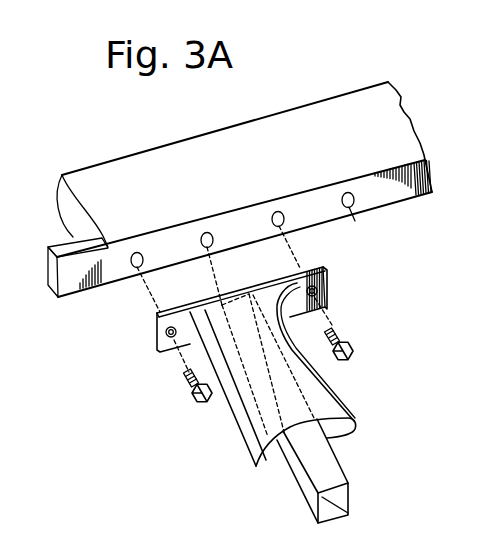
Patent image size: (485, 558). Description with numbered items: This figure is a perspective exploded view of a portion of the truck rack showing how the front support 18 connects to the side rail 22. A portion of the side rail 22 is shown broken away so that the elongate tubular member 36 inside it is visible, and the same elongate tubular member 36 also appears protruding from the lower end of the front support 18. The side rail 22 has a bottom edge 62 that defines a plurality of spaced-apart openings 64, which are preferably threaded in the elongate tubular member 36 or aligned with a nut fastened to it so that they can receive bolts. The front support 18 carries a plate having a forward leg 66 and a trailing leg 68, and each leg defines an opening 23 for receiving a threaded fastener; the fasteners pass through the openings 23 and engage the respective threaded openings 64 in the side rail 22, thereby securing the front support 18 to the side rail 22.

The front support 18 is at (243, 434).
The side rail 22 is at (216, 158).
The opening 23 is at (174, 338).
The elongate tubular member 36 is at (87, 290).
The bottom edge 62 is at (230, 237).
The openings 64 is at (206, 248).
The forward leg 66 is at (157, 350).
The trailing leg 68 is at (359, 289).